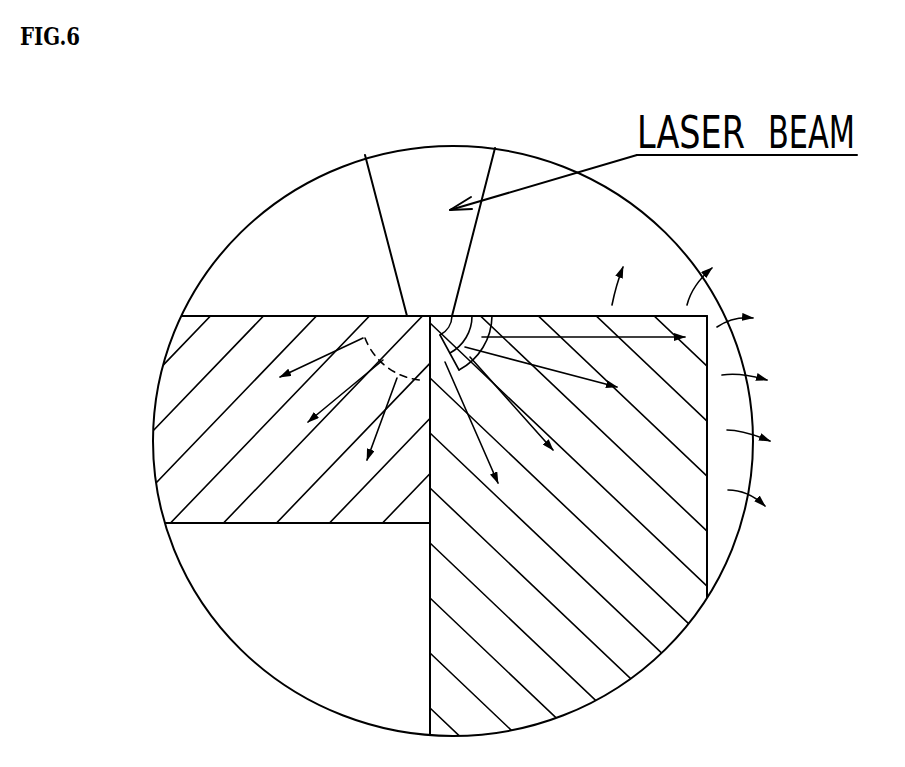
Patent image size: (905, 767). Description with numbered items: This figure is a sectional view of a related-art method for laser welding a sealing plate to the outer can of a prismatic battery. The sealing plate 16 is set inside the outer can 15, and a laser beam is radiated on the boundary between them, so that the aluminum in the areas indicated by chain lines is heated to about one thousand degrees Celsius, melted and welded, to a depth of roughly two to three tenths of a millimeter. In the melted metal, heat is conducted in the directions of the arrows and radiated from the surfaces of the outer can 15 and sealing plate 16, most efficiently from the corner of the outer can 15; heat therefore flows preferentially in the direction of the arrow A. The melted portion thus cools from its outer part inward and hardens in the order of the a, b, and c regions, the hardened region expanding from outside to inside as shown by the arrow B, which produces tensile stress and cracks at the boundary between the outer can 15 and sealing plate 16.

The outer can 15 is at (590, 628).
The sealing plate 16 is at (258, 485).
The arrow A is at (565, 410).
The arrow B is at (366, 399).
The a region a is at (470, 331).
The b region b is at (469, 323).
The c region c is at (456, 314).